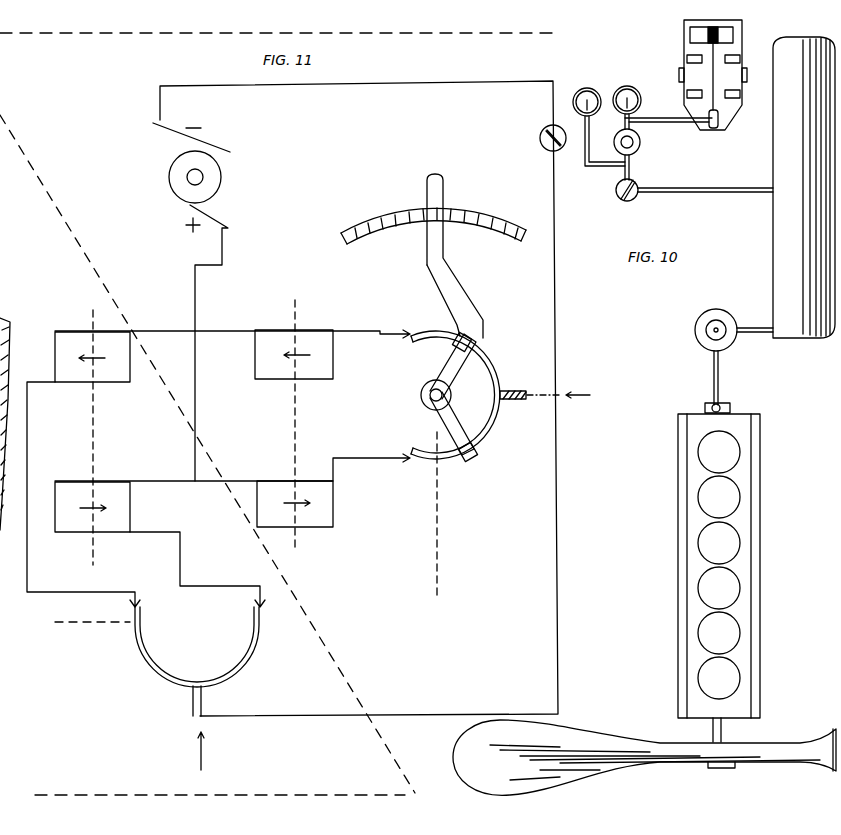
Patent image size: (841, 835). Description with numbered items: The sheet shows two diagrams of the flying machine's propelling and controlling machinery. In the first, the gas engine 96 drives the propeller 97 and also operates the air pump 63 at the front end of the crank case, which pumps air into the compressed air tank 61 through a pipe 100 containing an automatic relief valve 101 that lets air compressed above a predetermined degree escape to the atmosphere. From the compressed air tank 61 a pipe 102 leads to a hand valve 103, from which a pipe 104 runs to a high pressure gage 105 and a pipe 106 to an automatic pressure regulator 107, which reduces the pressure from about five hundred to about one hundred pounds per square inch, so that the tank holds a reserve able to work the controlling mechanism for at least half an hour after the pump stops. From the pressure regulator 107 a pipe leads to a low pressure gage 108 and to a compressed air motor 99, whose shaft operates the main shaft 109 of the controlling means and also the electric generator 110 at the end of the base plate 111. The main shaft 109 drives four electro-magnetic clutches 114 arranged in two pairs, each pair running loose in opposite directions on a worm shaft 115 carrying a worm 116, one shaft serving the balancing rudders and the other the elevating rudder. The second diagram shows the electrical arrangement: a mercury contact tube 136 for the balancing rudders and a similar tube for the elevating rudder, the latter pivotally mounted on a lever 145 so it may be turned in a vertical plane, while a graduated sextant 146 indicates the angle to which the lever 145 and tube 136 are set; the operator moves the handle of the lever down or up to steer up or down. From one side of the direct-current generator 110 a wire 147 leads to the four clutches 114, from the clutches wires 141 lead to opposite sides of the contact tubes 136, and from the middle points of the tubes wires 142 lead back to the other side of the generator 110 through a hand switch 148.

In FIG. 10, the compressed air tank 61 is at (772, 210).
In FIG. 10, the air pump 63 is at (705, 408).
In FIG. 10, the gas engine 96 is at (748, 545).
In FIG. 10, the propeller 97 is at (798, 741).
In FIG. 10, the compressed air motor 99 is at (728, 120).
In FIG. 10, the pipe 100 is at (712, 375).
In FIG. 10, the automatic relief valve 101 is at (696, 333).
In FIG. 10, the pipe 102 is at (705, 180).
In FIG. 10, the hand valve 103 is at (616, 190).
In FIG. 10, the pipe 104 is at (598, 170).
In FIG. 10, the high pressure gage 105 is at (587, 92).
In FIG. 10, the pipe 106 is at (632, 163).
In FIG. 10, the automatic pressure regulator 107 is at (641, 143).
In FIG. 10, the low pressure gage 108 is at (629, 91).
In FIG. 10, the main shaft 109 is at (713, 75).
In FIG. 11, the electric generator 110 is at (222, 177).
In FIG. 10, the electric generator 110 is at (742, 30).
In FIG. 10, the base plate 111 is at (684, 50).
In FIG. 11, the clutches 114 is at (123, 368).
In FIG. 11, the worm shaft 115 is at (142, 672).
In FIG. 11, the worm 116 is at (557, 300).
In FIG. 11, the mercury contact tube 136 is at (497, 420).
In FIG. 11, the wires 141 is at (27, 462).
In FIG. 11, the wires 142 is at (486, 543).
In FIG. 11, the lever 145 is at (468, 297).
In FIG. 11, the sextant 146 is at (477, 222).
In FIG. 11, the wire 147 is at (223, 250).
In FIG. 11, the hand switch 148 is at (538, 138).